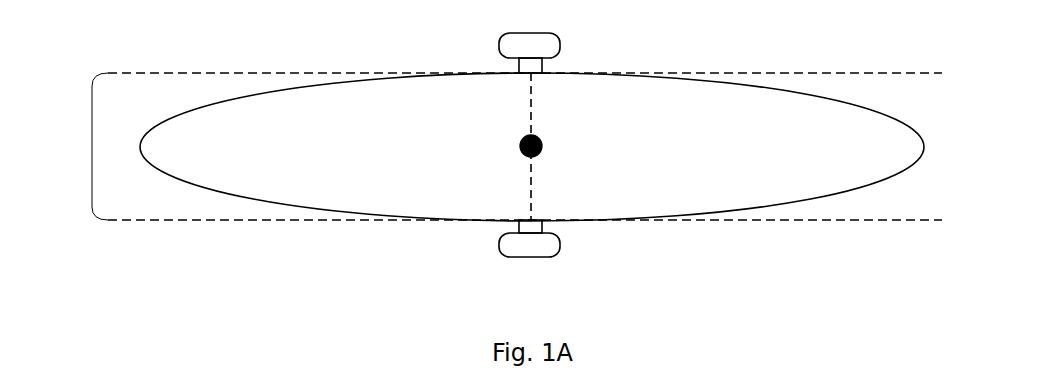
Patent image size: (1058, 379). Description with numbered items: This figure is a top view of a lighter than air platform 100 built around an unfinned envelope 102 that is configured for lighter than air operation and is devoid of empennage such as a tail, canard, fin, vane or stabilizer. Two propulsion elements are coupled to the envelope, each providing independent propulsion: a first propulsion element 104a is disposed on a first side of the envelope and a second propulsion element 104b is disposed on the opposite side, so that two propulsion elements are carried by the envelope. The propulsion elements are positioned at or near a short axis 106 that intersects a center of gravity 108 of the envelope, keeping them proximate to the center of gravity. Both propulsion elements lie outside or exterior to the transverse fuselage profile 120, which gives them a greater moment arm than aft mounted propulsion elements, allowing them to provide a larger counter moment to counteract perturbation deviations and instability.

The lighter than air platform 100 is at (532, 142).
The unfinned envelope 102 is at (268, 91).
The first propulsion element 104a is at (500, 40).
The second propulsion element 104b is at (500, 251).
The short axis 106 is at (530, 112).
The center of gravity 108 is at (542, 146).
The transverse fuselage profile 120 is at (92, 147).